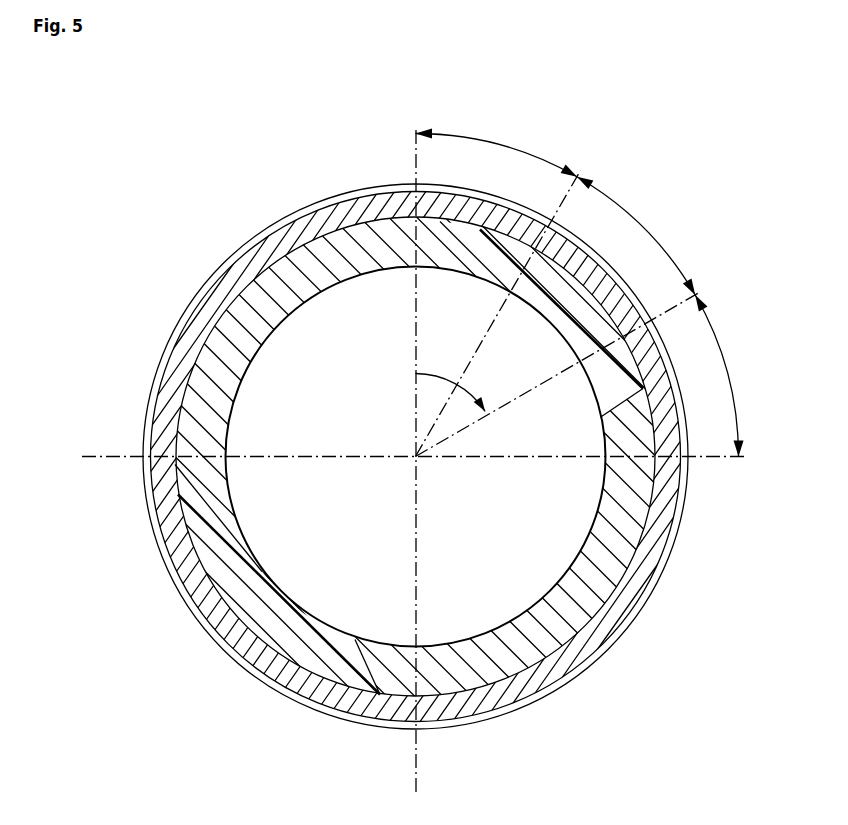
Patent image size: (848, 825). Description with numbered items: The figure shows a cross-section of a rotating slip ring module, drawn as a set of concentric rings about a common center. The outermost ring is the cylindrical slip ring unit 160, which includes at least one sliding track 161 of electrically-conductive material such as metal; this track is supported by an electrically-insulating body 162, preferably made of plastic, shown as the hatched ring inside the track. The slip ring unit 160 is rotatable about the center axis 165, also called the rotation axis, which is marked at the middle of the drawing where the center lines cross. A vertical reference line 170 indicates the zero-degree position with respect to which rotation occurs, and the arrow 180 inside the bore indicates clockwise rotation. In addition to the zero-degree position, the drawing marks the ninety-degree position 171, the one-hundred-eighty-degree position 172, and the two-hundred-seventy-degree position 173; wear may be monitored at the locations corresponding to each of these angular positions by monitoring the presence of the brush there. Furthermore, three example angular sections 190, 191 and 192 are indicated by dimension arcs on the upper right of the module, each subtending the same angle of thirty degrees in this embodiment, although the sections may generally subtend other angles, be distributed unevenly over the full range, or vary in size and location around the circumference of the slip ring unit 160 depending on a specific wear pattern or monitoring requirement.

The slip ring unit 160 is at (158, 564).
The sliding track 161 is at (662, 540).
The electrically-insulating body 162 is at (197, 429).
The center axis 165 is at (420, 458).
The reference line 170 is at (414, 348).
The 90°-position 171 is at (541, 463).
The 180°-position 172 is at (423, 576).
The 270°-position 173 is at (292, 463).
The arrow 180 is at (450, 386).
The angular section 190 is at (498, 275).
The angular section 191 is at (564, 317).
The angular section 192 is at (748, 376).